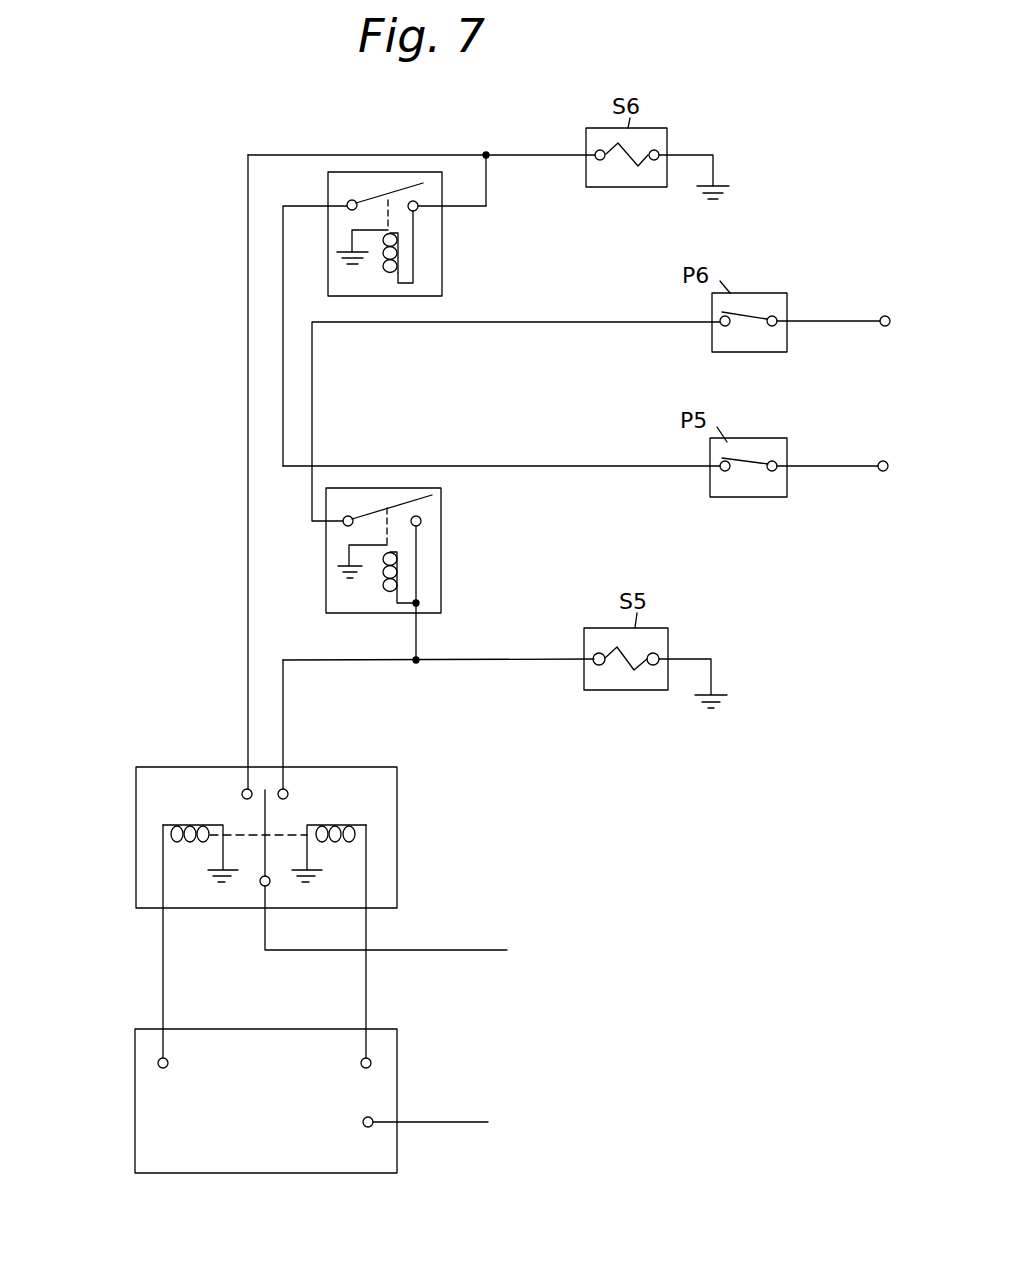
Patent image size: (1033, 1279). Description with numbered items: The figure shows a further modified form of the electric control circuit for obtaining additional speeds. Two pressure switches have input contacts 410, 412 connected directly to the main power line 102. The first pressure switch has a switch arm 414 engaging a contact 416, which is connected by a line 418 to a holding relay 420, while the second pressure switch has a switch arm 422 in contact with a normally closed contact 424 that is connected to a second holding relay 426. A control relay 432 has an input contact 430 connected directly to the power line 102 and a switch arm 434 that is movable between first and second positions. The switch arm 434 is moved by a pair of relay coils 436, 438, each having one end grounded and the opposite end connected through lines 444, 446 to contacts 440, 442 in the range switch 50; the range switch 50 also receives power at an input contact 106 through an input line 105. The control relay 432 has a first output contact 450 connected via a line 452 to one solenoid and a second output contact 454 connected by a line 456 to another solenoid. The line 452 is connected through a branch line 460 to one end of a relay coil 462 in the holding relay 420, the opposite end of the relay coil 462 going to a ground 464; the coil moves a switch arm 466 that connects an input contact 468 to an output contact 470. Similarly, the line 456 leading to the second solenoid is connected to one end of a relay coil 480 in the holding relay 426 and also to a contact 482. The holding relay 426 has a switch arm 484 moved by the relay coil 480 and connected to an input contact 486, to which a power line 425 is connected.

The range switch 50 is at (303, 1163).
The main power line 102 is at (833, 325).
The input line 105 is at (478, 1122).
The input contact 106 is at (377, 1117).
The input contact 410 is at (775, 473).
The input contact 412 is at (775, 327).
The switch arm 414 is at (755, 457).
The contact 416 is at (717, 473).
The line 418 is at (438, 466).
The holding relay 420 is at (454, 293).
The switch arm 422 is at (753, 308).
The normally closed contact 424 is at (720, 324).
The power line 425 is at (312, 363).
The holding relay 426 is at (453, 557).
The input contact 430 is at (262, 886).
The control relay 432 is at (409, 779).
The switch arm 434 is at (268, 817).
The relay coil 436 is at (182, 825).
The relay coil 438 is at (343, 820).
The contact 440 is at (158, 1063).
The contact 442 is at (377, 1062).
The line 444 is at (162, 963).
The line 446 is at (366, 990).
The first output contact 450 is at (240, 793).
The line 452 is at (247, 335).
The second output contact 454 is at (293, 792).
The line 456 is at (373, 663).
The branch line 460 is at (486, 177).
The relay coil 462 is at (400, 250).
The ground 464 is at (347, 243).
The switch arm 466 is at (388, 190).
The input contact 468 is at (348, 203).
The output contact 470 is at (418, 207).
The relay coil 480 is at (380, 583).
The contact 482 is at (422, 521).
The switch arm 484 is at (397, 500).
The input contact 486 is at (345, 525).